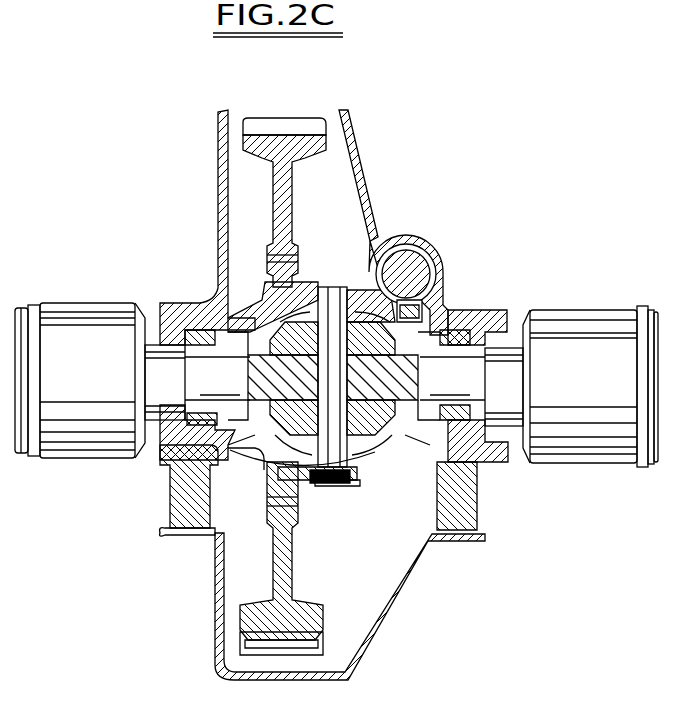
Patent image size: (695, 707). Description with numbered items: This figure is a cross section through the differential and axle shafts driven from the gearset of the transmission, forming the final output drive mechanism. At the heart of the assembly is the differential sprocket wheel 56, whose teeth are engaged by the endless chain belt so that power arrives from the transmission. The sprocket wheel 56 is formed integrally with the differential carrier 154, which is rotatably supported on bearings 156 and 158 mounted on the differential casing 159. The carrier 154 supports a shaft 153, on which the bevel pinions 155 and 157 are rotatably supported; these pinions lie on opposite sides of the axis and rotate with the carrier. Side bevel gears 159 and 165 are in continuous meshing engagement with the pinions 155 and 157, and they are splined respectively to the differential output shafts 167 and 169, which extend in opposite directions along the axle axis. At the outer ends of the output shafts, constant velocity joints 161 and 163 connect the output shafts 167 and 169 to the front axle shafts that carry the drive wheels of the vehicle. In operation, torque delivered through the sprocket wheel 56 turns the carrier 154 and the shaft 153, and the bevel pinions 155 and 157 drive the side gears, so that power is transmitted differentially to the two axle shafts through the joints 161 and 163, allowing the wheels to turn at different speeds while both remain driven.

The output sprocket wheel 56 is at (283, 200).
The shaft 153 is at (332, 290).
The differential carrier 154 is at (300, 284).
The bevel pinion 155 is at (376, 245).
The bearing 156 is at (468, 330).
The bevel pinion 157 is at (366, 484).
The bearing 158 is at (200, 306).
The differential casing 159 is at (366, 192).
The constant velocity joint 161 is at (596, 310).
The constant velocity joint 163 is at (90, 306).
The side bevel gear 165 is at (263, 466).
The differential output shaft 167 is at (466, 388).
The differential output shaft 169 is at (232, 388).